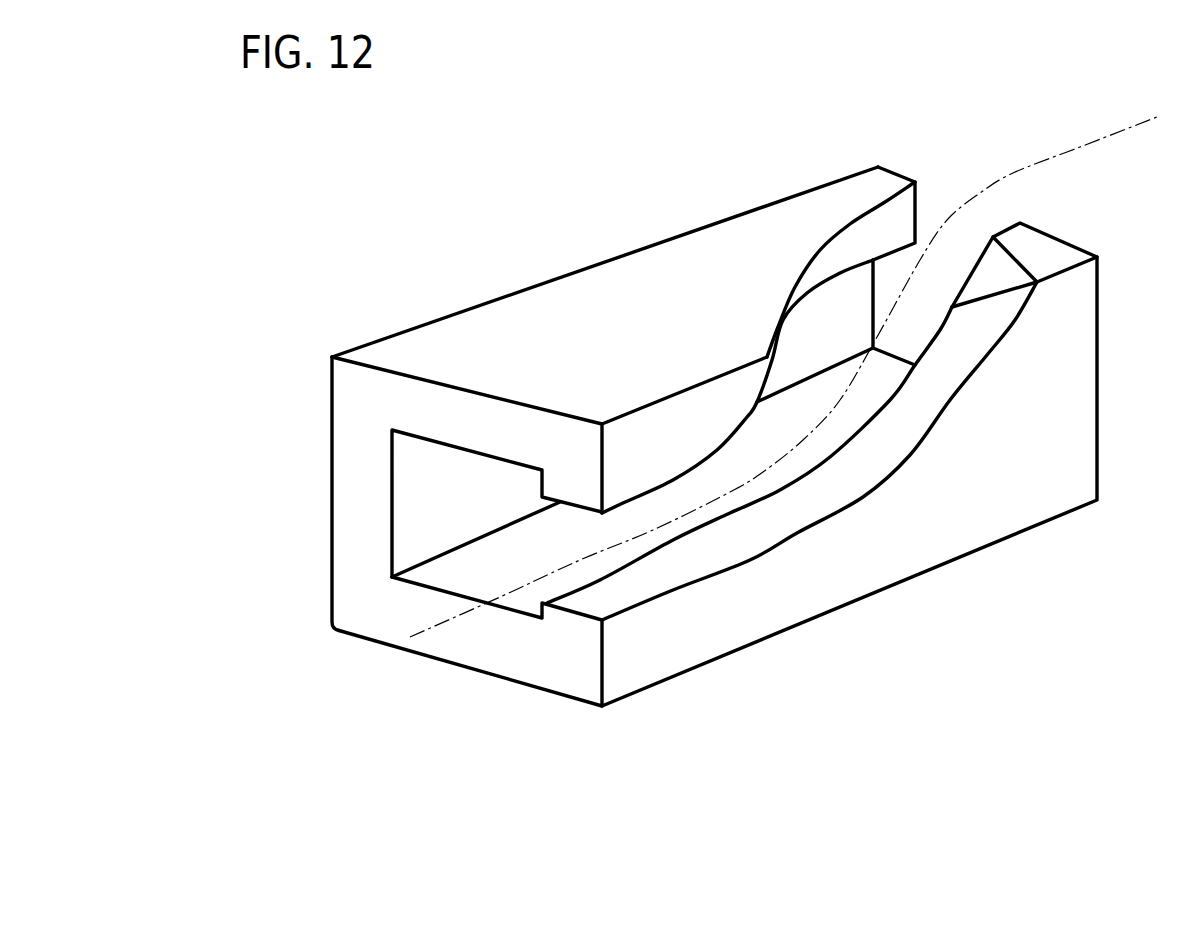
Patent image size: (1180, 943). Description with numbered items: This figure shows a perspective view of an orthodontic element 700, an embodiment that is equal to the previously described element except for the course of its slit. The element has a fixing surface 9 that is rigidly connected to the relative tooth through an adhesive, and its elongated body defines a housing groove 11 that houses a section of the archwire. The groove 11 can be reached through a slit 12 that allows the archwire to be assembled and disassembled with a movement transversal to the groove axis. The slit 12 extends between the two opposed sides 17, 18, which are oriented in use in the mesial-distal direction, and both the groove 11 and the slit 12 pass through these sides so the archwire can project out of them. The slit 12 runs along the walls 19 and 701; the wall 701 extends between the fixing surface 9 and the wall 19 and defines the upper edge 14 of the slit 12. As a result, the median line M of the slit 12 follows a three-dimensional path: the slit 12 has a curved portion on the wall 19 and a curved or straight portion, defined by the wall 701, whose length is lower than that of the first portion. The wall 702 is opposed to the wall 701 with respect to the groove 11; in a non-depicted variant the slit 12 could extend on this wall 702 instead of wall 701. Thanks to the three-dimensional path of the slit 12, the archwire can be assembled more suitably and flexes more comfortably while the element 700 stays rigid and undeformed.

The orthodontic element 700 is at (598, 106).
The fixing surface 9 is at (318, 374).
The side 18 is at (357, 414).
The wall 702 is at (470, 647).
The housing groove 11 is at (412, 493).
The wall 701 is at (470, 407).
The side 17 is at (902, 170).
The slit 12 is at (680, 490).
The upper edge 14 is at (792, 401).
The wall 19 is at (930, 547).
The median line M is at (1070, 153).